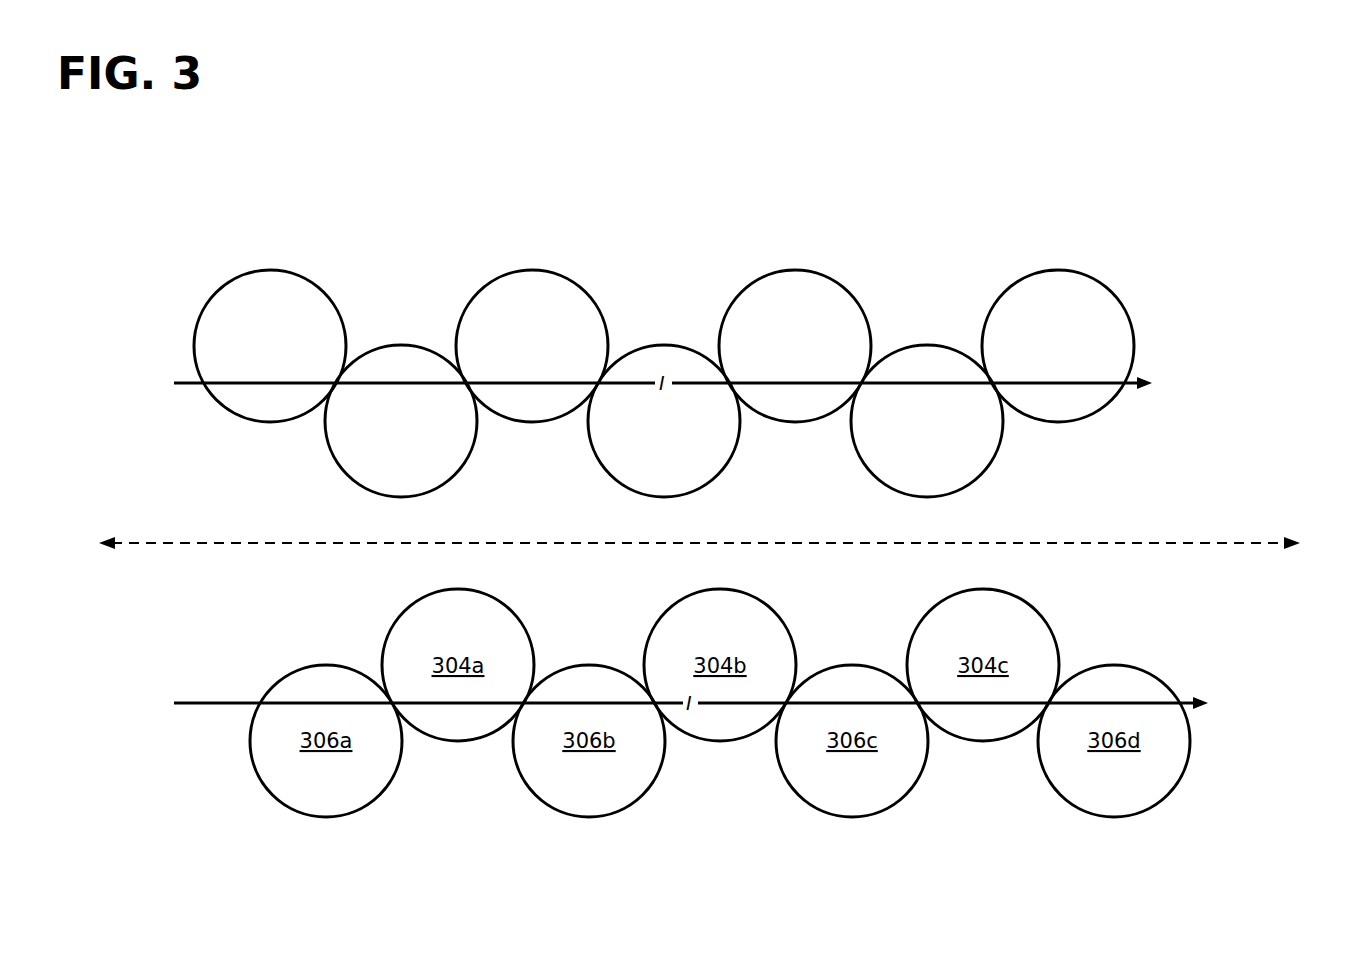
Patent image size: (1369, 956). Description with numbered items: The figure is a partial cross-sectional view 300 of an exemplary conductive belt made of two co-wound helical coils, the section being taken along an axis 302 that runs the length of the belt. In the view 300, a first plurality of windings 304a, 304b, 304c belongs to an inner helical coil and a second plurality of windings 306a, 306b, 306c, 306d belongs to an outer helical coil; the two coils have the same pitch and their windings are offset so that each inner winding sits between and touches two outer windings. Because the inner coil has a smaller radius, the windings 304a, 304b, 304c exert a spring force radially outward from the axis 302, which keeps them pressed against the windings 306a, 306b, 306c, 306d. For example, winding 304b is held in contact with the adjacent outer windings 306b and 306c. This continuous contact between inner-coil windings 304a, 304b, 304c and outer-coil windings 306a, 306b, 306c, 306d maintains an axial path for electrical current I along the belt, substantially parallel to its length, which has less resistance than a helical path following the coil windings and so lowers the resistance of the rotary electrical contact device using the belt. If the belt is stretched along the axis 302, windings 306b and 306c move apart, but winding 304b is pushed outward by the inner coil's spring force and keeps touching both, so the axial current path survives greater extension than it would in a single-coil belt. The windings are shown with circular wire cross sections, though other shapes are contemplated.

The partial cross-sectional view 300 is at (1057, 102).
The axis 302 is at (1253, 543).
The winding of inner helical coil 304a is at (401, 421).
The winding of inner helical coil 304b is at (664, 421).
The winding of inner helical coil 304c is at (927, 421).
The winding of outer helical coil 306a is at (270, 346).
The winding of outer helical coil 306b is at (532, 346).
The winding of outer helical coil 306c is at (795, 346).
The winding of outer helical coil 306d is at (1058, 346).